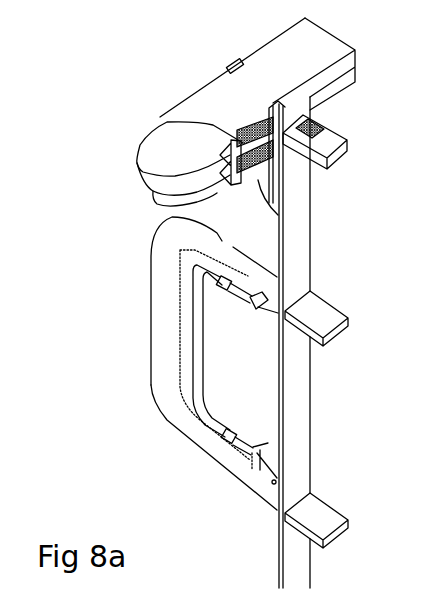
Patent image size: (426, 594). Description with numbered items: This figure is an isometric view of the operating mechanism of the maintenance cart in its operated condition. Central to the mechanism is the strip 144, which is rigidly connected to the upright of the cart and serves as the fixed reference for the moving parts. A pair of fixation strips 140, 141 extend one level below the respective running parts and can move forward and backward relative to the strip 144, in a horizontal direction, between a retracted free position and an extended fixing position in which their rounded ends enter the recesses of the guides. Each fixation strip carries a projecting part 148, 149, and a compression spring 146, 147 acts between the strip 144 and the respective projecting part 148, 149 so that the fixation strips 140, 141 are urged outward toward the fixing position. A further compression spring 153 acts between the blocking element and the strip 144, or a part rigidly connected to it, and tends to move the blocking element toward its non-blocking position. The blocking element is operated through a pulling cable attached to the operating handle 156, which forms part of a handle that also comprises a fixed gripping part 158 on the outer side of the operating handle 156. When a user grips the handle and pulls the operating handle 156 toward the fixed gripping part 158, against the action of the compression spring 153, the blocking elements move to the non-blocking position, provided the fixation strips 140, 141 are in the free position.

The fixation strip 140 is at (206, 114).
The fixation strip 141 is at (172, 208).
The strip 144 is at (306, 412).
The compression spring 146 is at (257, 117).
The compression spring 147 is at (292, 219).
The projecting part 148 is at (157, 126).
The projecting part 149 is at (234, 180).
The compression spring 153 is at (310, 122).
The operating handle 156 is at (203, 357).
The fixed gripping part 158 is at (163, 336).